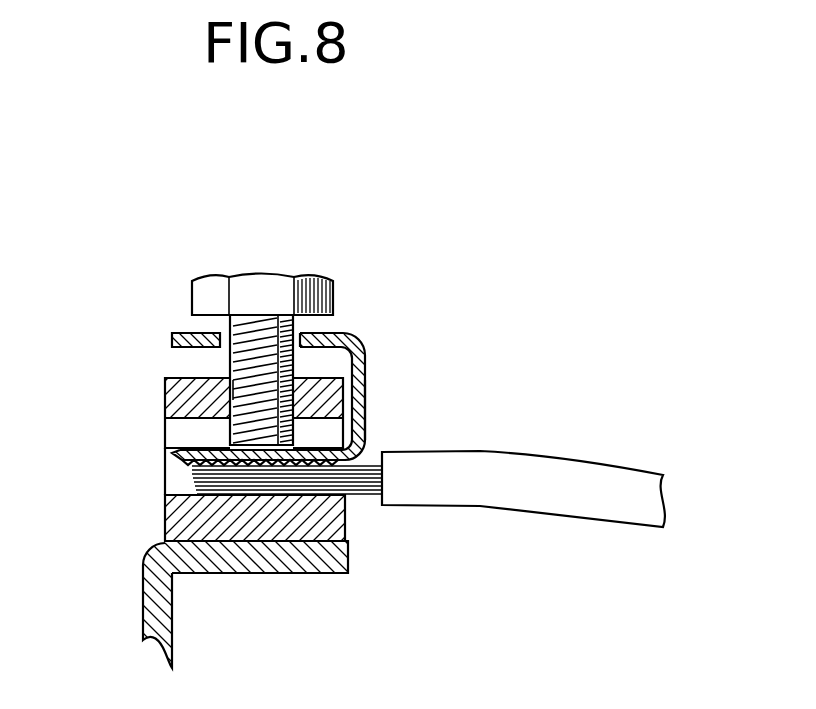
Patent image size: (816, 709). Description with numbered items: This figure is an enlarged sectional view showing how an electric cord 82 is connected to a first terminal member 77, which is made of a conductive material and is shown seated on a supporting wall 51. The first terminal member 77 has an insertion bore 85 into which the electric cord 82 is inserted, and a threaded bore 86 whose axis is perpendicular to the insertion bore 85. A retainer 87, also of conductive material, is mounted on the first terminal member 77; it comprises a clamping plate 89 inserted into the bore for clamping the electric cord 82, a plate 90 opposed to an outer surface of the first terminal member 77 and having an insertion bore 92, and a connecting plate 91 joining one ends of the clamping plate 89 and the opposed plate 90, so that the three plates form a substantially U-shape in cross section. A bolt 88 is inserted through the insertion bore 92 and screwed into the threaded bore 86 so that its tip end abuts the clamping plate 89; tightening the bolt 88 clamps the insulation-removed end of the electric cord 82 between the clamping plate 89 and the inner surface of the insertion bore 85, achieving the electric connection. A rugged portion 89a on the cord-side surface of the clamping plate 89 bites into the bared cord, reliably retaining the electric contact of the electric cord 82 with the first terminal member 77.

The housing wall 51 is at (152, 618).
The first terminal member 77 is at (177, 522).
The electric cord 82 is at (500, 462).
The insertion bore 85 is at (176, 430).
The threaded bore 86 is at (230, 400).
The retainer 87 is at (366, 349).
The bolt 88 is at (250, 285).
The clamping plate 89 is at (172, 449).
The rugged portion 89a is at (343, 565).
The plate 90 is at (186, 338).
The connecting plate 91 is at (368, 412).
The insertion bore 92 is at (280, 315).